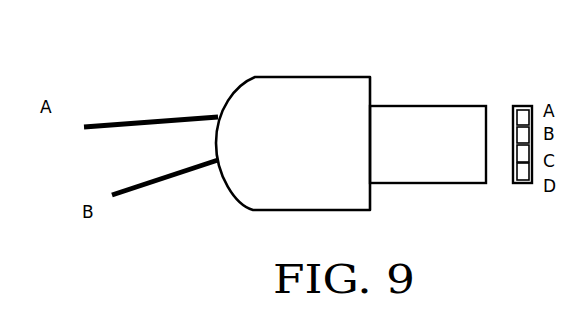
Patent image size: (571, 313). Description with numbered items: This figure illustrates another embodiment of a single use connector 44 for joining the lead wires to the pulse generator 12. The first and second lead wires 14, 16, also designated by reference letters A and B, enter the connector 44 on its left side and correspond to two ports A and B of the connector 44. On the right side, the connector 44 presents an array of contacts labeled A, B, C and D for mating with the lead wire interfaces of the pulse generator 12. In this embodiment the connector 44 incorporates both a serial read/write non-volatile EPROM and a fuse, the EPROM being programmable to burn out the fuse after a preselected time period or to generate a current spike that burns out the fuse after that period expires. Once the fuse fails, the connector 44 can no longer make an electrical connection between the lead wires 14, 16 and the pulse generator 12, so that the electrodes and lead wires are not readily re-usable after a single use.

The pulse generator 12 is at (542, 95).
The first lead wire 14 is at (152, 118).
The second lead wire 16 is at (158, 178).
The connector 44 is at (298, 88).